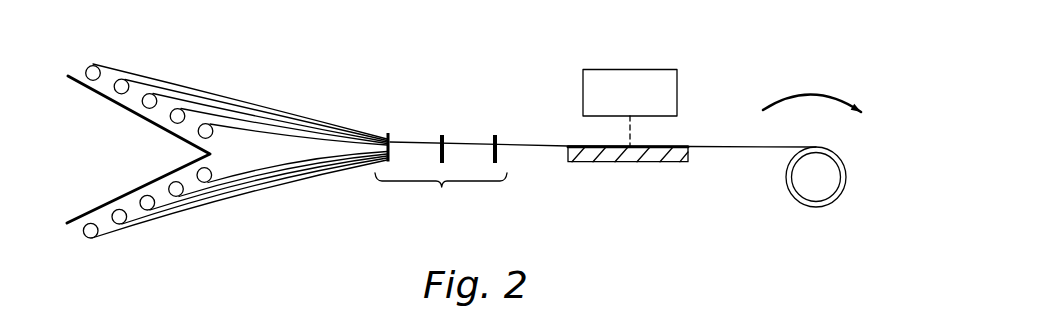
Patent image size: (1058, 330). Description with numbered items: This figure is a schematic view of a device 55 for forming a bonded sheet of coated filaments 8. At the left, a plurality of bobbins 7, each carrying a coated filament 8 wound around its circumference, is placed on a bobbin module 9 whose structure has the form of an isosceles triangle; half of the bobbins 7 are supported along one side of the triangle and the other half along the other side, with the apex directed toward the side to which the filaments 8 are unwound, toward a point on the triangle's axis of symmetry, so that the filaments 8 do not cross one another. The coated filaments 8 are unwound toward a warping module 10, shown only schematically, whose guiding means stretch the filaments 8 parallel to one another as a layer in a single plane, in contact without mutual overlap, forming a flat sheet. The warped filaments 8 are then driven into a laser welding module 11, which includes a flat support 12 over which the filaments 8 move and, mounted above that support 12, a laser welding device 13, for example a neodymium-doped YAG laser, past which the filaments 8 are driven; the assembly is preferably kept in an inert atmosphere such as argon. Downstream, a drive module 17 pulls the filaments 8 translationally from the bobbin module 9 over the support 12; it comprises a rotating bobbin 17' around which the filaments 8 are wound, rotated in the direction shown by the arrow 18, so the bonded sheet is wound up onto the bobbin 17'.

The bobbin module 9 is at (151, 65).
The bobbin 7 is at (175, 194).
The coated filament 8 is at (267, 187).
The warping module 10 is at (441, 176).
The device for forming a bonded sheet of coated filaments 55 is at (510, 82).
The laser welding device 13 is at (653, 82).
The laser welding module 11 is at (597, 205).
The flat support 12 is at (643, 163).
The drive module 17 is at (797, 216).
The rotating bobbin 17' is at (843, 201).
The arrow 18 is at (812, 95).